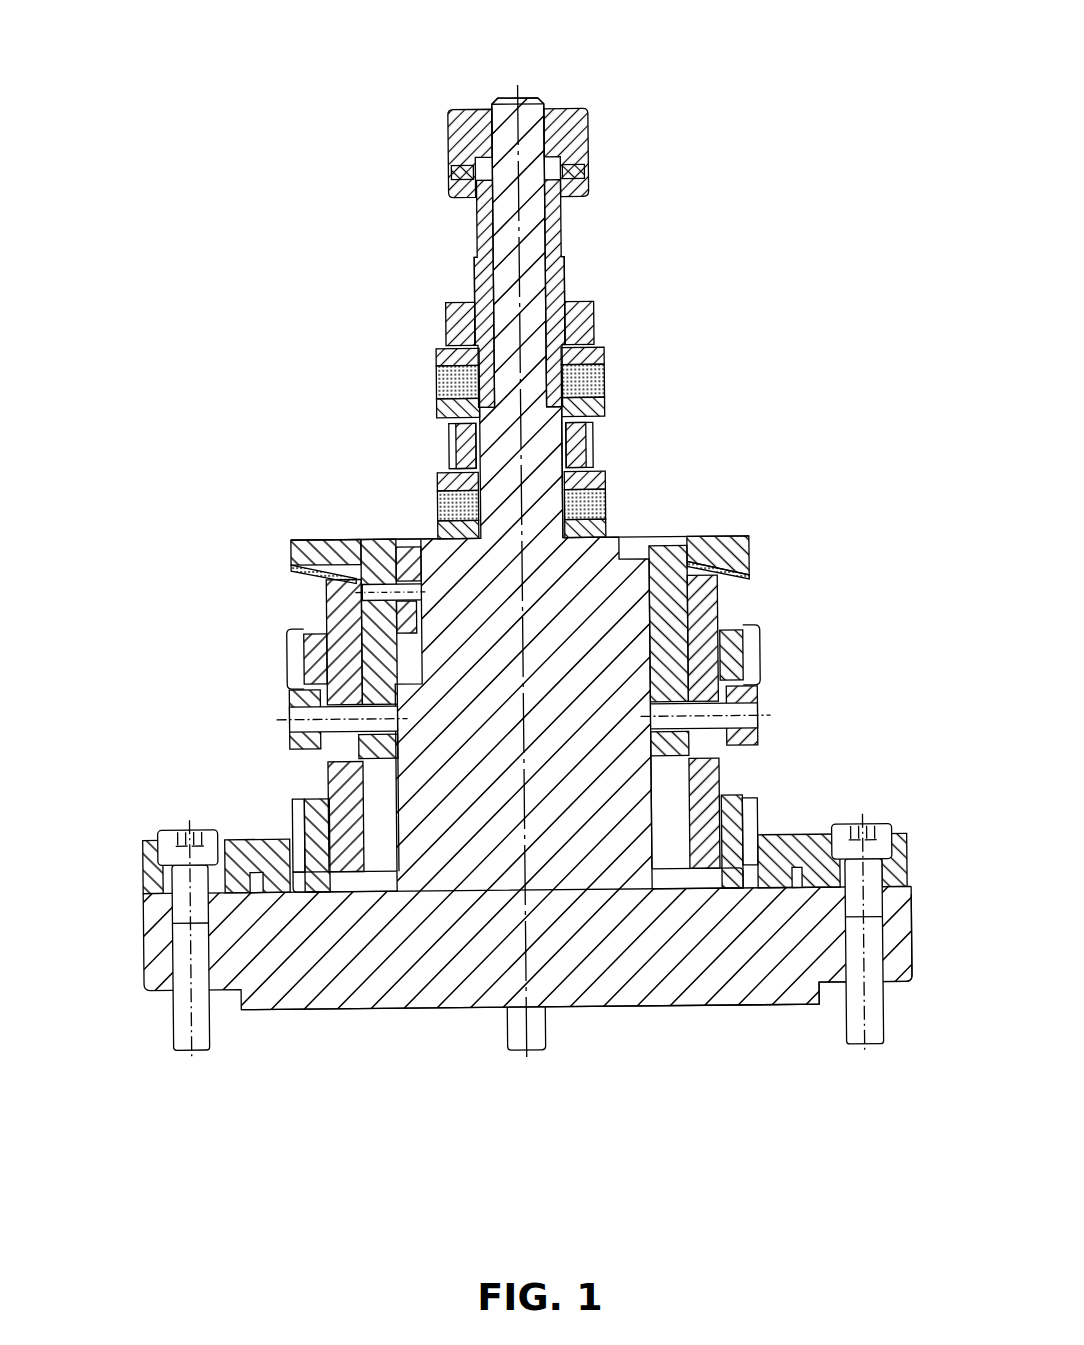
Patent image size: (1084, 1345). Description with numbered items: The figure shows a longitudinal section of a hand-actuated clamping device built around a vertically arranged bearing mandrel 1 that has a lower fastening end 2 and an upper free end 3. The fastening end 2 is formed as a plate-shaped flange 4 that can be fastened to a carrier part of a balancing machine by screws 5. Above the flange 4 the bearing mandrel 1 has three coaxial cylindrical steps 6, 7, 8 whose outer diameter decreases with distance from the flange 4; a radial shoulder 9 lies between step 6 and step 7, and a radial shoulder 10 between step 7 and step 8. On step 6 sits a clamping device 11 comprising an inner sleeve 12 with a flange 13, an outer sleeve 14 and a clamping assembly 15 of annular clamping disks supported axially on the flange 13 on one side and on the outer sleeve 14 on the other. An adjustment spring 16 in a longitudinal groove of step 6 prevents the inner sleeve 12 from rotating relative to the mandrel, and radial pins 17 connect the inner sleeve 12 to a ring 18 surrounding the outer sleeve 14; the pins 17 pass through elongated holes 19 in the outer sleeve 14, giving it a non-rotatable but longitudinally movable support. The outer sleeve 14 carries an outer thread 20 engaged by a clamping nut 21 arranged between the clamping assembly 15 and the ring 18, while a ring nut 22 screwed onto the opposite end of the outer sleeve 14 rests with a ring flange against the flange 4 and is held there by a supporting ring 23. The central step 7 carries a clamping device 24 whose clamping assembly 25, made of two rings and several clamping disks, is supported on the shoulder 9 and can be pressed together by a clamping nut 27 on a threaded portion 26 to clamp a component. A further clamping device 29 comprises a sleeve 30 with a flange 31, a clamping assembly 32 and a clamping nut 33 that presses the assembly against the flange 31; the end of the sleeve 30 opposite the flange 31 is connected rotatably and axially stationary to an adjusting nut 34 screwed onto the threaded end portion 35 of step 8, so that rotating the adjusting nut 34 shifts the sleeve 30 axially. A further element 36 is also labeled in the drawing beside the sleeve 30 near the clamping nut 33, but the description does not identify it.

The bearing mandrel 1 is at (423, 1012).
The fastening end 2 is at (585, 1010).
The free end 3 is at (543, 104).
The plate-shaped flange 4 is at (766, 992).
The screws 5 is at (172, 1030).
The step 6 is at (651, 811).
The step 7 is at (606, 478).
The step 8 is at (569, 252).
The radial shoulder 9 is at (609, 530).
The radial shoulder 10 is at (441, 404).
The clamping device 11 is at (314, 586).
The inner sleeve 12 is at (686, 612).
The flange 13 is at (712, 540).
The outer sleeve 14 is at (758, 808).
The clamping assembly 15 is at (742, 580).
The adjustment spring 16 is at (353, 618).
The radial pins 17 is at (289, 720).
The ring 18 is at (747, 693).
The elongated holes 19 is at (704, 750).
The outer thread 20 is at (344, 780).
The clamping nut 21 is at (293, 655).
The ring nut 22 is at (304, 812).
The supporting ring 23 is at (141, 880).
The clamping device 24 is at (612, 440).
The clamping assembly 25 is at (440, 514).
The portion 26 is at (453, 440).
The clamping nut 27 is at (450, 466).
The clamping device 29 is at (464, 257).
The sleeve 30 is at (569, 222).
The flange 31 is at (609, 405).
The clamping assembly 32 is at (609, 372).
The clamping nut 33 is at (601, 322).
The adjusting nut 34 is at (595, 140).
The end portion 35 is at (496, 108).
The collar 36 is at (453, 343).